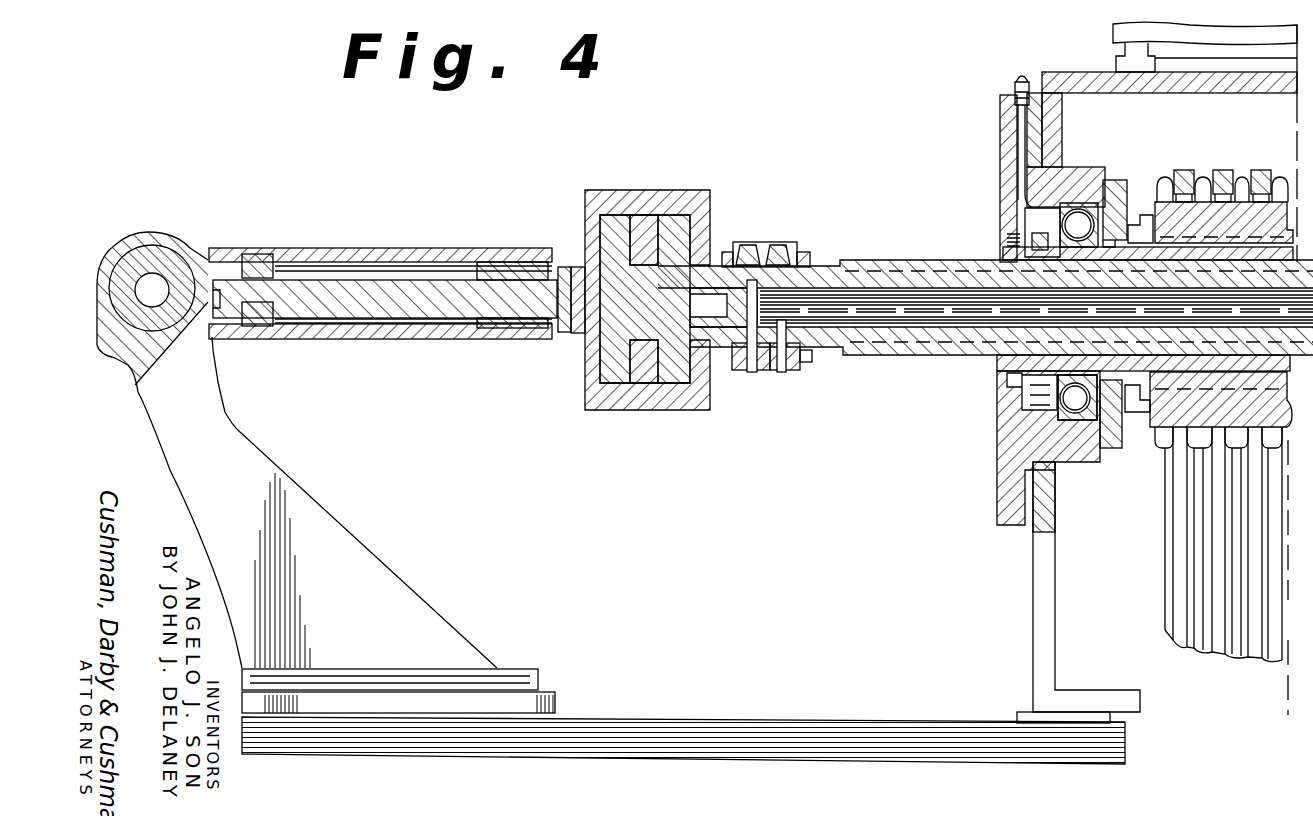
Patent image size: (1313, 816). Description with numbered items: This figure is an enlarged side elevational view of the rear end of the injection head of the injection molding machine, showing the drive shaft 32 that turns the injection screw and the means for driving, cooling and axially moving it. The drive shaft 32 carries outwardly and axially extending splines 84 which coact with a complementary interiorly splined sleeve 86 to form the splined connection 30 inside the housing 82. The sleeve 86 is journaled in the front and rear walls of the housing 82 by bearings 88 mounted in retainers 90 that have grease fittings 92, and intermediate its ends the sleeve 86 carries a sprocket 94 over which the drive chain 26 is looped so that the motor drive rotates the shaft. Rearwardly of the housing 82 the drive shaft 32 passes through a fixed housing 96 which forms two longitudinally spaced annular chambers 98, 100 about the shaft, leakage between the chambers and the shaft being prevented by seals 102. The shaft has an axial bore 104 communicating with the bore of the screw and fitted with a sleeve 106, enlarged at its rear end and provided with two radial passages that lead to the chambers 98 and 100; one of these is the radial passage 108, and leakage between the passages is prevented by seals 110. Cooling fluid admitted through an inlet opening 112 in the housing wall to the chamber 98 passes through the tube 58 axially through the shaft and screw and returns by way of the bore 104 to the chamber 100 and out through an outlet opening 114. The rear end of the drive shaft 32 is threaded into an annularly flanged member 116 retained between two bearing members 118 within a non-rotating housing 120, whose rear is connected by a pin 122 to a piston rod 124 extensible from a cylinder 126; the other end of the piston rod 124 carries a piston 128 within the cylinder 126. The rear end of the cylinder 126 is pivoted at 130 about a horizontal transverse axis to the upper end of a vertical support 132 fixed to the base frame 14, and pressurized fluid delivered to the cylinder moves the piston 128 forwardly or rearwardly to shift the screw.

The base frame 14 is at (880, 693).
The drive chain 26 is at (1165, 550).
The splined connection 30 is at (1153, 165).
The drive shaft 32 is at (843, 352).
The tube 58 is at (982, 312).
The housing 82 is at (1037, 633).
The splines 84 is at (940, 250).
The sleeve 86 is at (1002, 252).
The bearings 88 is at (1078, 197).
The retainers 90 is at (1000, 448).
The grease fittings 92 is at (1023, 72).
The sprocket 94 is at (1153, 426).
The fixed housing 96 is at (805, 362).
The annular chamber 98 is at (752, 242).
The annular chamber 100 is at (800, 248).
The seals 102 is at (738, 243).
The axial bore 104 is at (945, 312).
The sleeve 106 is at (743, 372).
The radial passage 108 is at (800, 370).
The seals 110 is at (718, 350).
The inlet opening 112 is at (781, 372).
The outlet opening 114 is at (752, 372).
The annularly flanged member 116 is at (623, 412).
The bearing members 118 is at (592, 387).
The non-rotating housing 120 is at (648, 190).
The pin 122 is at (568, 267).
The piston rod 124 is at (427, 284).
The cylinder 126 is at (393, 234).
The piston 128 is at (258, 258).
The pivot 130 is at (165, 236).
The vertical support 132 is at (232, 428).